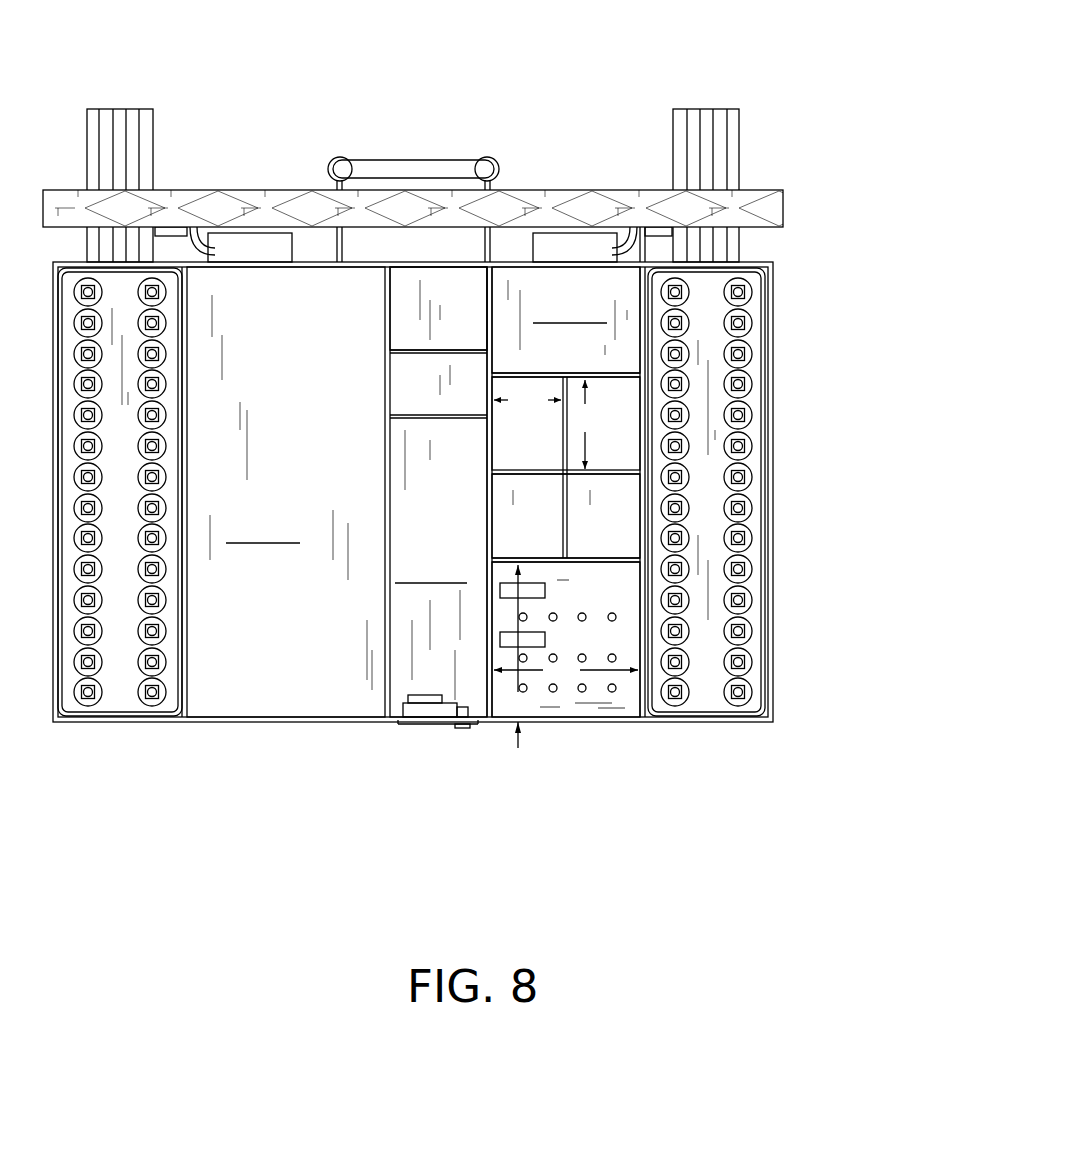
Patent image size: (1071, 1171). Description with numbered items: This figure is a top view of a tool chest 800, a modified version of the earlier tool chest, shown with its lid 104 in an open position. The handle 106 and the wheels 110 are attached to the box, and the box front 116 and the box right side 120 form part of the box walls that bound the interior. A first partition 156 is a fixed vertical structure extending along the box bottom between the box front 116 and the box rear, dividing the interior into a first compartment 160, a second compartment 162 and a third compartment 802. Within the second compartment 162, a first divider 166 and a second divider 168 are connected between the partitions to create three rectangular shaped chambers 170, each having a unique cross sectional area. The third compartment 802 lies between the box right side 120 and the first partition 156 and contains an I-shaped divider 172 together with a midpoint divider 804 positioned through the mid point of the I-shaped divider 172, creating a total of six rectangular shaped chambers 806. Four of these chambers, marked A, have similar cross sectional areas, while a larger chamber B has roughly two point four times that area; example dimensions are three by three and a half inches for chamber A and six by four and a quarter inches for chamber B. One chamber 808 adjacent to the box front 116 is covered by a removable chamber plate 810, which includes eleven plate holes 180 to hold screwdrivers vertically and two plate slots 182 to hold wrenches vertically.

The tool chest 800 is at (217, 722).
The wheels 110 is at (103, 123).
The box front 116 is at (724, 752).
The lid 104 is at (200, 190).
The handle 106 is at (372, 168).
The first compartment 160 is at (325, 492).
The second compartment 162 is at (438, 492).
The first partition 156 is at (487, 655).
The rectangular shaped chambers 170 is at (455, 294).
The second divider 168 is at (424, 338).
The first divider 166 is at (424, 428).
The third compartment 802 is at (566, 320).
The I-shaped divider 172 is at (620, 377).
The midpoint divider 804 is at (620, 470).
The rectangular shaped chambers 806 is at (628, 524).
The chamber 808 is at (583, 736).
The plate slots 182 is at (545, 640).
The plate holes 180 is at (612, 658).
The chamber plate 810 is at (548, 707).
The box right side 120 is at (643, 720).